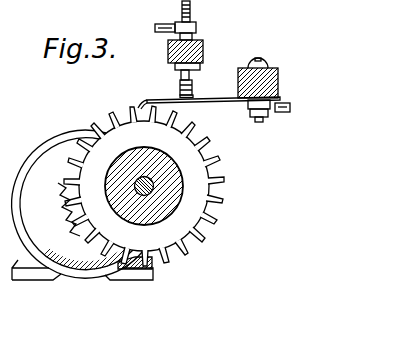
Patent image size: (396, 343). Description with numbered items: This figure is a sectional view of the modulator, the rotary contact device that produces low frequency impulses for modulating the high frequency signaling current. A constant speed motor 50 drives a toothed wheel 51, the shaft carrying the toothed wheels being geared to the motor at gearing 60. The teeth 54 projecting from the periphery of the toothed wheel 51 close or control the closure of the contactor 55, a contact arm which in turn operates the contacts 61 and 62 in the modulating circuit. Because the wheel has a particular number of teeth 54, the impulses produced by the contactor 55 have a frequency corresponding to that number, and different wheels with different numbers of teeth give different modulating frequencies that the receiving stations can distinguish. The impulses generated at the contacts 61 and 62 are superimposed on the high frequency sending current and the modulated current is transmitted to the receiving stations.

The constant speed motor 50 is at (82, 205).
The toothed wheel 51 is at (212, 214).
The teeth 54 is at (223, 185).
The contactor 55 is at (147, 99).
The gearing 60 is at (57, 204).
The contact 61 is at (182, 80).
The contact 62 is at (196, 96).